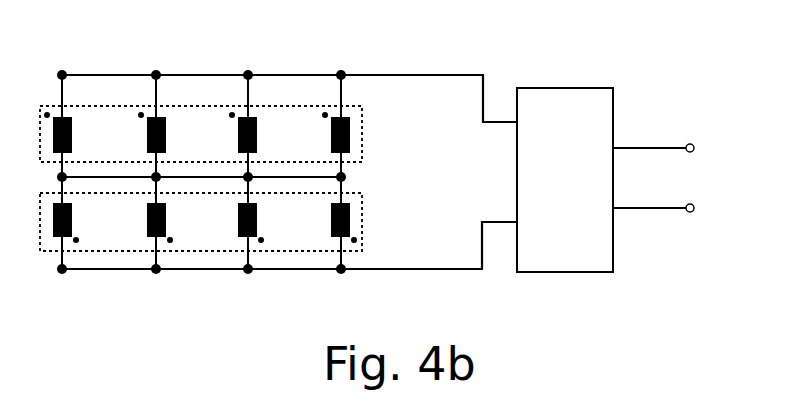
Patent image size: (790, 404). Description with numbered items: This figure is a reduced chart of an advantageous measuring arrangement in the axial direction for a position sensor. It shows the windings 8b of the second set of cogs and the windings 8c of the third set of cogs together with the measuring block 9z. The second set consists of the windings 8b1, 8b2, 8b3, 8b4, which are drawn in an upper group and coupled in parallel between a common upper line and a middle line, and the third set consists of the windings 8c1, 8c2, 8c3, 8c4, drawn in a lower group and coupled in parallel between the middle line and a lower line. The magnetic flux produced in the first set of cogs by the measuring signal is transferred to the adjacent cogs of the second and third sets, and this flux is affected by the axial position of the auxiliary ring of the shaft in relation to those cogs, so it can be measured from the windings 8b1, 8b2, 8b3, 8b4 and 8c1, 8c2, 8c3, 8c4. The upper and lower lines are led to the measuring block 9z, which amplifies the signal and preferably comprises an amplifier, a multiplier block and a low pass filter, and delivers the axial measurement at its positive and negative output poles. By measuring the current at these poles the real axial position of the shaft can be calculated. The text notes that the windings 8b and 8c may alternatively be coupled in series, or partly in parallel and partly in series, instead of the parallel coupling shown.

The windings of the second set of cogs 8b is at (354, 101).
The winding of the second set 8b1 is at (73, 133).
The winding of the second set 8b2 is at (167, 133).
The winding of the second set 8b3 is at (258, 133).
The winding of the second set 8b4 is at (352, 133).
The windings of the third set of cogs 8c is at (358, 252).
The winding of the third set 8c1 is at (73, 218).
The winding of the third set 8c2 is at (167, 218).
The winding of the third set 8c3 is at (258, 218).
The winding of the third set 8c4 is at (352, 220).
The measuring block 9z is at (590, 272).